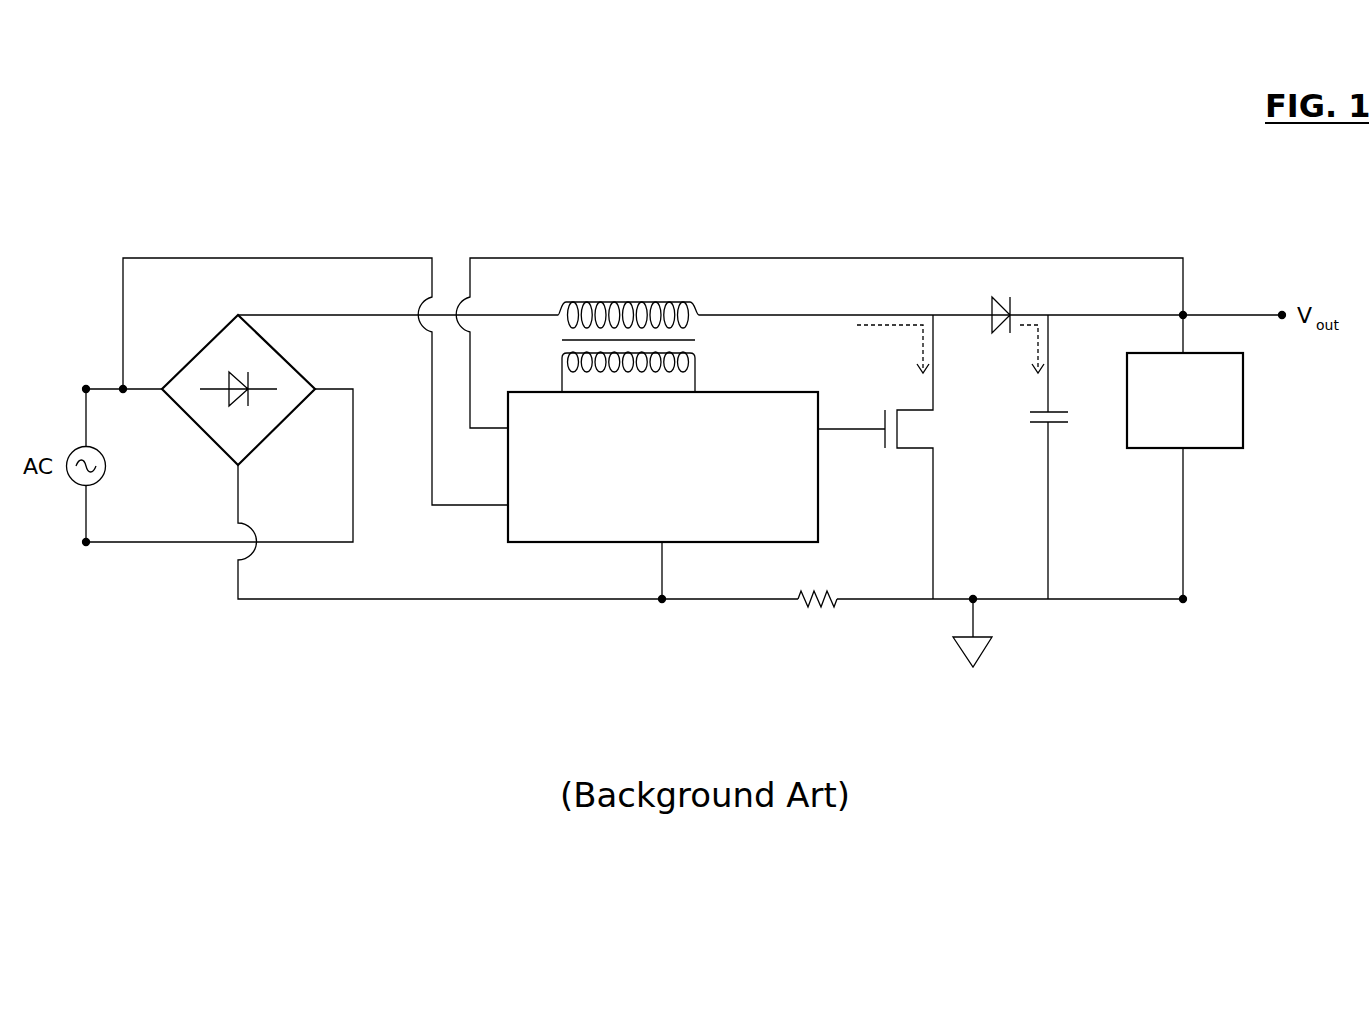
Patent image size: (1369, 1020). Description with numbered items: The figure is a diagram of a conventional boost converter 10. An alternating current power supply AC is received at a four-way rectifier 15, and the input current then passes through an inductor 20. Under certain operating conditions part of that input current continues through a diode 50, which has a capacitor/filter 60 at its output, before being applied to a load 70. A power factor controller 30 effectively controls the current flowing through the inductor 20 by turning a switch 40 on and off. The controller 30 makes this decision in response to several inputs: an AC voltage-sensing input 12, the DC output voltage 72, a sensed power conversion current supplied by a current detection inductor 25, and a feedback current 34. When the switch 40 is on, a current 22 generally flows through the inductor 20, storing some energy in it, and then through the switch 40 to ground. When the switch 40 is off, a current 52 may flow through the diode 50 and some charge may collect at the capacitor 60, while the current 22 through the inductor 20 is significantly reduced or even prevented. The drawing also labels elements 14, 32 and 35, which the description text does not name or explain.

The boost converter 10 is at (395, 203).
The AC voltage-sensing input 12 is at (263, 258).
The return wire 14 is at (182, 543).
The four-way rectifier 15 is at (287, 360).
The inductor 20 is at (698, 307).
The current 22 is at (888, 327).
The current detection inductor 25 is at (698, 372).
The power factor controller 30 is at (818, 517).
The gate drive line 32 is at (843, 432).
The feedback current 34 is at (595, 600).
The sense resistor 35 is at (833, 603).
The switch 40 is at (915, 432).
The diode 50 is at (990, 308).
The current 52 is at (1030, 327).
The capacitor/filter 60 is at (1038, 427).
The load 70 is at (1243, 428).
The DC output voltage 72 is at (838, 257).